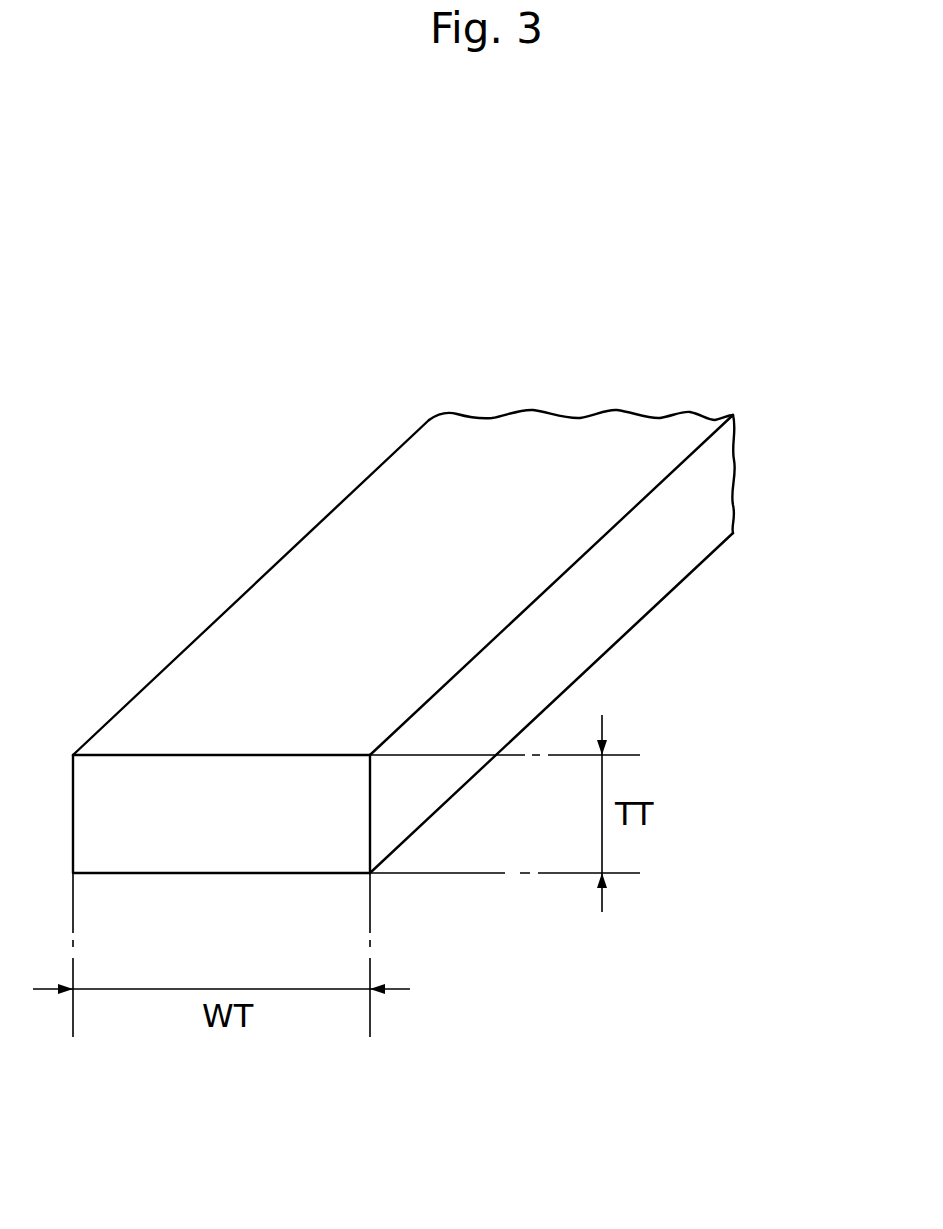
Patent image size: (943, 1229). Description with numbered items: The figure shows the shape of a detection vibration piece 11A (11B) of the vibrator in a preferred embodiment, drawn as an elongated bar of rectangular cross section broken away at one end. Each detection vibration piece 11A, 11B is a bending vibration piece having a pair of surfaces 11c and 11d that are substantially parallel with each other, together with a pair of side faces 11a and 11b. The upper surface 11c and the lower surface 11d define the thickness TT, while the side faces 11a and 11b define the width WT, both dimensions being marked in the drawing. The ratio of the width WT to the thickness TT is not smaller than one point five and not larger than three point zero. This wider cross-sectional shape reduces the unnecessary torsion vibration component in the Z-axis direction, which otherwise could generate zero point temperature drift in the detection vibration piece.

The detection vibration piece 11A is at (448, 641).
The detection vibration piece 11B is at (607, 651).
The side face 11a is at (672, 578).
The side face 11b is at (283, 560).
The surface 11c is at (435, 462).
The surface 11d is at (463, 788).